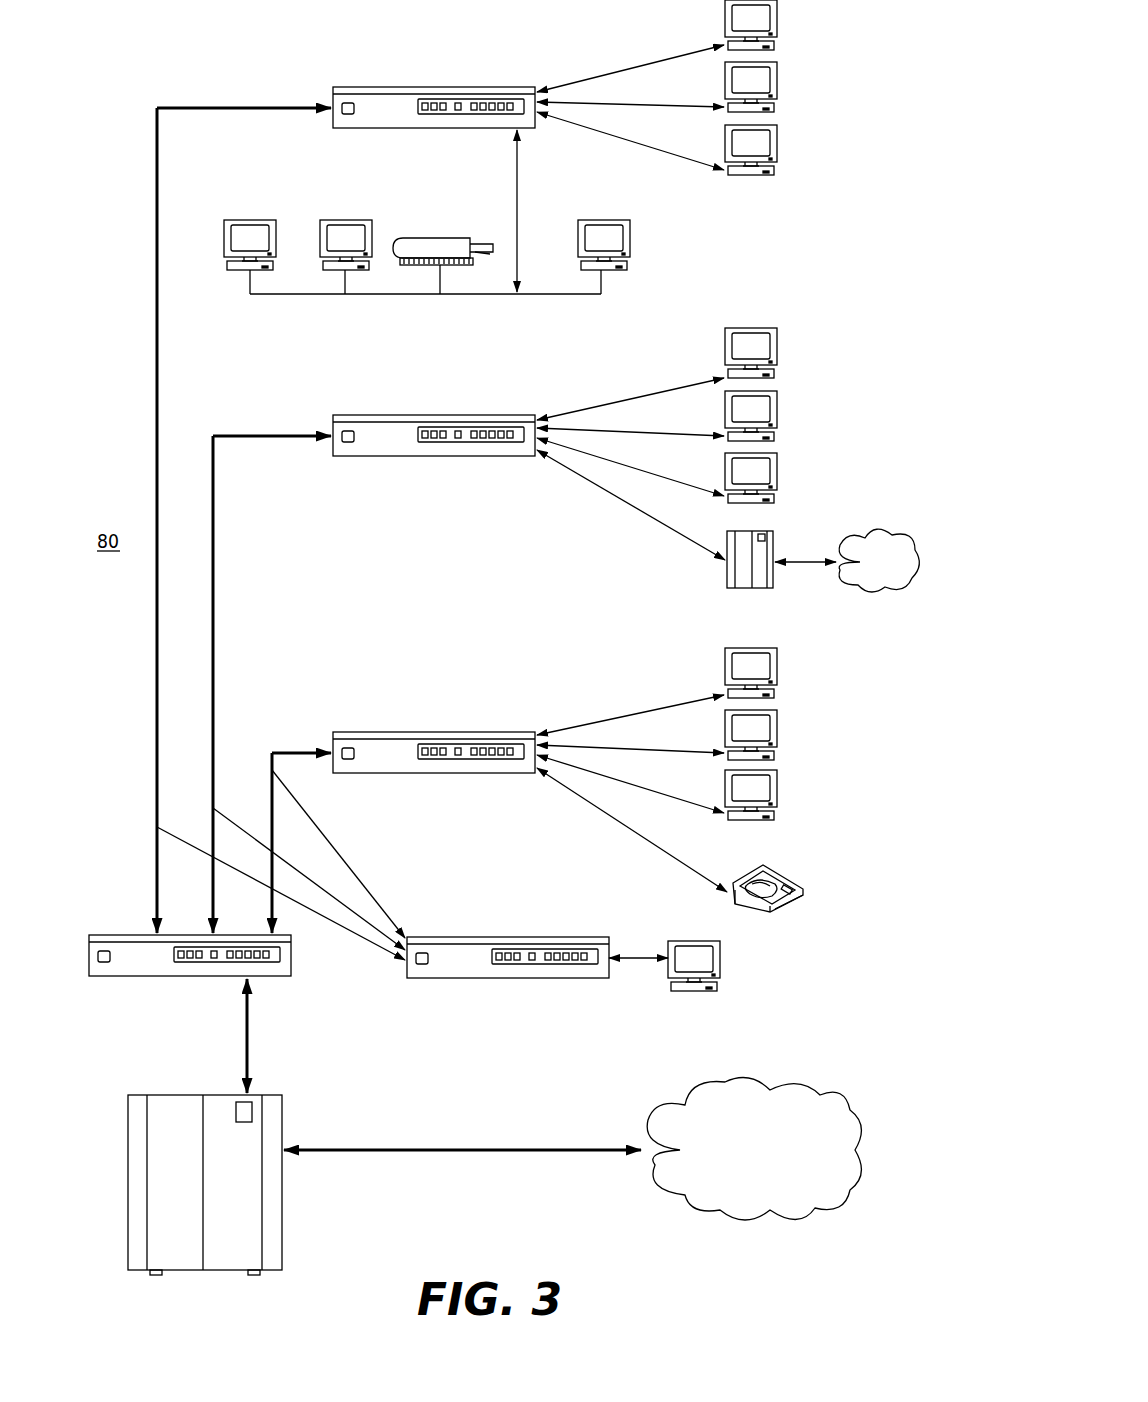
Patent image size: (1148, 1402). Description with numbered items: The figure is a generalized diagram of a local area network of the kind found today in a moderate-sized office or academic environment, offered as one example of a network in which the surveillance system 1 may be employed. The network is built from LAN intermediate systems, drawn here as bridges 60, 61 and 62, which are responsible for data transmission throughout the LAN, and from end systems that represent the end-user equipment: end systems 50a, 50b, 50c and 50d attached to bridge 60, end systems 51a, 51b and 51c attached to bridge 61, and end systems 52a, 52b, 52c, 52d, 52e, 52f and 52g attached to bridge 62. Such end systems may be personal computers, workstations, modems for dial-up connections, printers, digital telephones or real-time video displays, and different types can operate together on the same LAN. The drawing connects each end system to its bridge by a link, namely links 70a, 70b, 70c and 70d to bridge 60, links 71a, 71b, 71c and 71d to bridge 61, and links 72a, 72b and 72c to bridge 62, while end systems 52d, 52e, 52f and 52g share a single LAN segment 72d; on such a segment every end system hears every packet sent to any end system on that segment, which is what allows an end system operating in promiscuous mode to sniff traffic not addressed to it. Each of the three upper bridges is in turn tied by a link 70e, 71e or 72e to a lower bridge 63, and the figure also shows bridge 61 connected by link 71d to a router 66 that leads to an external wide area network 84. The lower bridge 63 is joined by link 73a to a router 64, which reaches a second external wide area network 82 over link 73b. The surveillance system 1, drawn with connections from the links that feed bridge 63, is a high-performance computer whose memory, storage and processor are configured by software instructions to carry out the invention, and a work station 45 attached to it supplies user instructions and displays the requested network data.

The surveillance system 1 is at (482, 937).
The work station 45 is at (722, 958).
The end system 50a is at (777, 668).
The end system 50b is at (777, 728).
The end system 50c is at (777, 788).
The end system 50d is at (783, 875).
The end system 51a is at (777, 348).
The end system 51b is at (777, 410).
The end system 51c is at (777, 472).
The end system 52a is at (777, 13).
The end system 52b is at (777, 75).
The end system 52c is at (777, 140).
The end system 52d is at (601, 220).
The end system 52e is at (442, 238).
The end system 52f is at (345, 220).
The end system 52g is at (258, 220).
The LAN intermediate system 60 is at (420, 732).
The LAN intermediate system 61 is at (410, 415).
The LAN intermediate system 62 is at (396, 87).
The bridge 63 is at (130, 935).
The router 64 is at (160, 1095).
The router 66 is at (773, 545).
The network link 70a is at (666, 706).
The network link 70b is at (686, 751).
The network link 70c is at (697, 804).
The network link 70d is at (661, 855).
The network link 70e is at (292, 748).
The network link 71a is at (665, 390).
The network link 71b is at (687, 434).
The network link 71c is at (696, 486).
The network link 71d is at (681, 535).
The network link 71e is at (280, 430).
The network link 72a is at (647, 65).
The network link 72b is at (647, 103).
The network link 72c is at (657, 148).
The LAN segment 72d is at (517, 185).
The network link 72e is at (251, 100).
The network link 73a is at (247, 1032).
The network link 73b is at (430, 1150).
The wide area network 82 is at (783, 1082).
The wide area network 84 is at (865, 535).